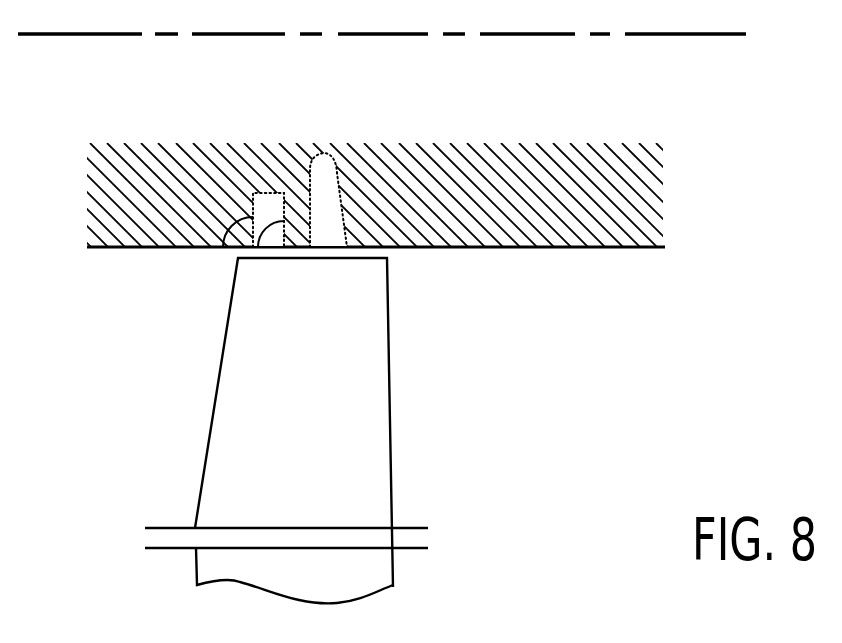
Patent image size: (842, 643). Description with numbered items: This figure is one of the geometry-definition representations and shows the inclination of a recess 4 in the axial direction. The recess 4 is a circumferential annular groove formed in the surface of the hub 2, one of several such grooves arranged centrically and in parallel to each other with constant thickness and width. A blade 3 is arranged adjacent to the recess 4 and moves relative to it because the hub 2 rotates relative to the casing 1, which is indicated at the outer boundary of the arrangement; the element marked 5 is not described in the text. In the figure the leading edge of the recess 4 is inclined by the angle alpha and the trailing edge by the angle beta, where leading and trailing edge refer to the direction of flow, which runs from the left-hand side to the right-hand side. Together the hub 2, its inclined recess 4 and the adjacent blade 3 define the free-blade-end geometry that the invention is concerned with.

The casing 1 is at (373, 572).
The hub 2 is at (648, 187).
The blade 3 is at (373, 390).
The annular recess 4 is at (326, 178).
The casing outer wall 5 is at (708, 36).